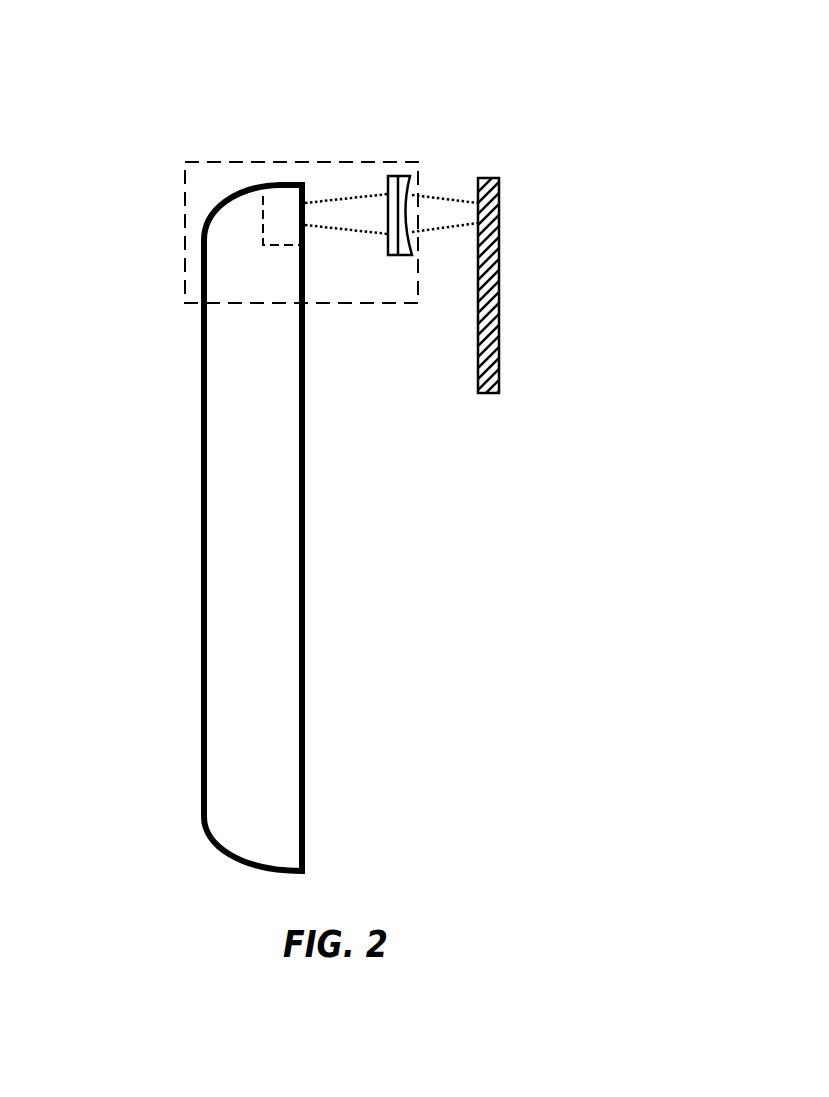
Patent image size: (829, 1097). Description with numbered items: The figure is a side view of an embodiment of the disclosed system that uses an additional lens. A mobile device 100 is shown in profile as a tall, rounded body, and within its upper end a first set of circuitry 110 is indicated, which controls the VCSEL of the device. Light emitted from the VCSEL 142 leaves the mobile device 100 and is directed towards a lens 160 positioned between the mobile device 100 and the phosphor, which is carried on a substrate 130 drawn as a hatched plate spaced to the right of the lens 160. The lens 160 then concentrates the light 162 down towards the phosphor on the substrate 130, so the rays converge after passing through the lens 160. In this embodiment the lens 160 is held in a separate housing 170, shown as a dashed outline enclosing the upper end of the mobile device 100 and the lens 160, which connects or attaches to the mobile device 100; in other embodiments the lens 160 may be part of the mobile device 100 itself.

The mobile device 100 is at (200, 492).
The first set of circuitry 110 is at (285, 217).
The substrate 130 is at (487, 178).
The light emitted from the VCSEL 142 is at (340, 195).
The lens 160 is at (401, 255).
The concentrated light 162 is at (435, 197).
The separate housing 170 is at (195, 162).